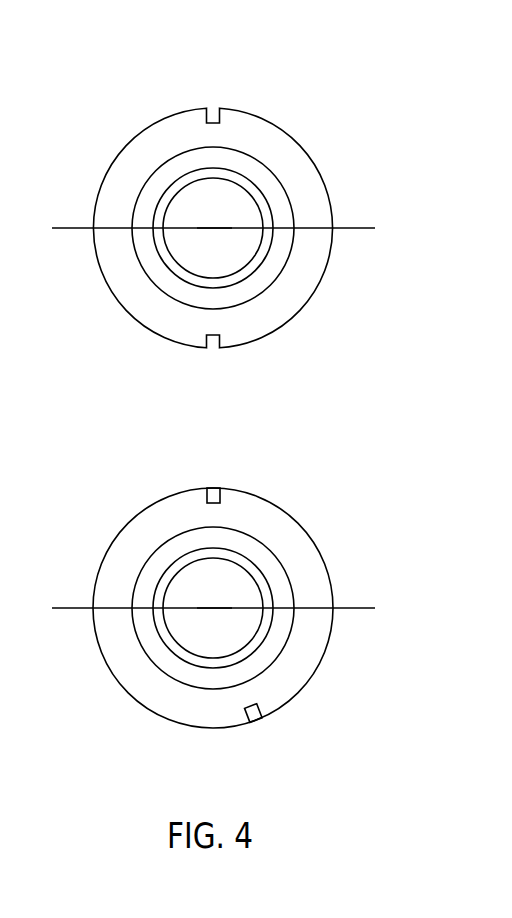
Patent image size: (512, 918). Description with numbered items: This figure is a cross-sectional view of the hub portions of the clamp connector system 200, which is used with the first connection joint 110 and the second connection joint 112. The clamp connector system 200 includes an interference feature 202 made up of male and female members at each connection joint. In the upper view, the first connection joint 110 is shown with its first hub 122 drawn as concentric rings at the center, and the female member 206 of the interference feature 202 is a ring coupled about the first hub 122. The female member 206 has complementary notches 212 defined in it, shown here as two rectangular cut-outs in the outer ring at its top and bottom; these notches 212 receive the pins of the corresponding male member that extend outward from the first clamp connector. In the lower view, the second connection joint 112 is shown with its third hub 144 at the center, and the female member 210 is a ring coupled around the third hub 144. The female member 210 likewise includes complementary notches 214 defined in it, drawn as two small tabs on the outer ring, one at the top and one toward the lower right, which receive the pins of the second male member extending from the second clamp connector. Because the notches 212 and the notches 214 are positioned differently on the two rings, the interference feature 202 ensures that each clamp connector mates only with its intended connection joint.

The clamp connector system 200 is at (318, 87).
The interference feature 202 is at (254, 229).
The first connection joint 110 is at (376, 137).
The female member 206 is at (310, 302).
The notches 212 is at (215, 103).
The first hub 122 is at (272, 212).
The second connection joint 112 is at (378, 514).
The female member 210 is at (312, 680).
The notches 214 is at (213, 487).
The third hub 144 is at (272, 592).